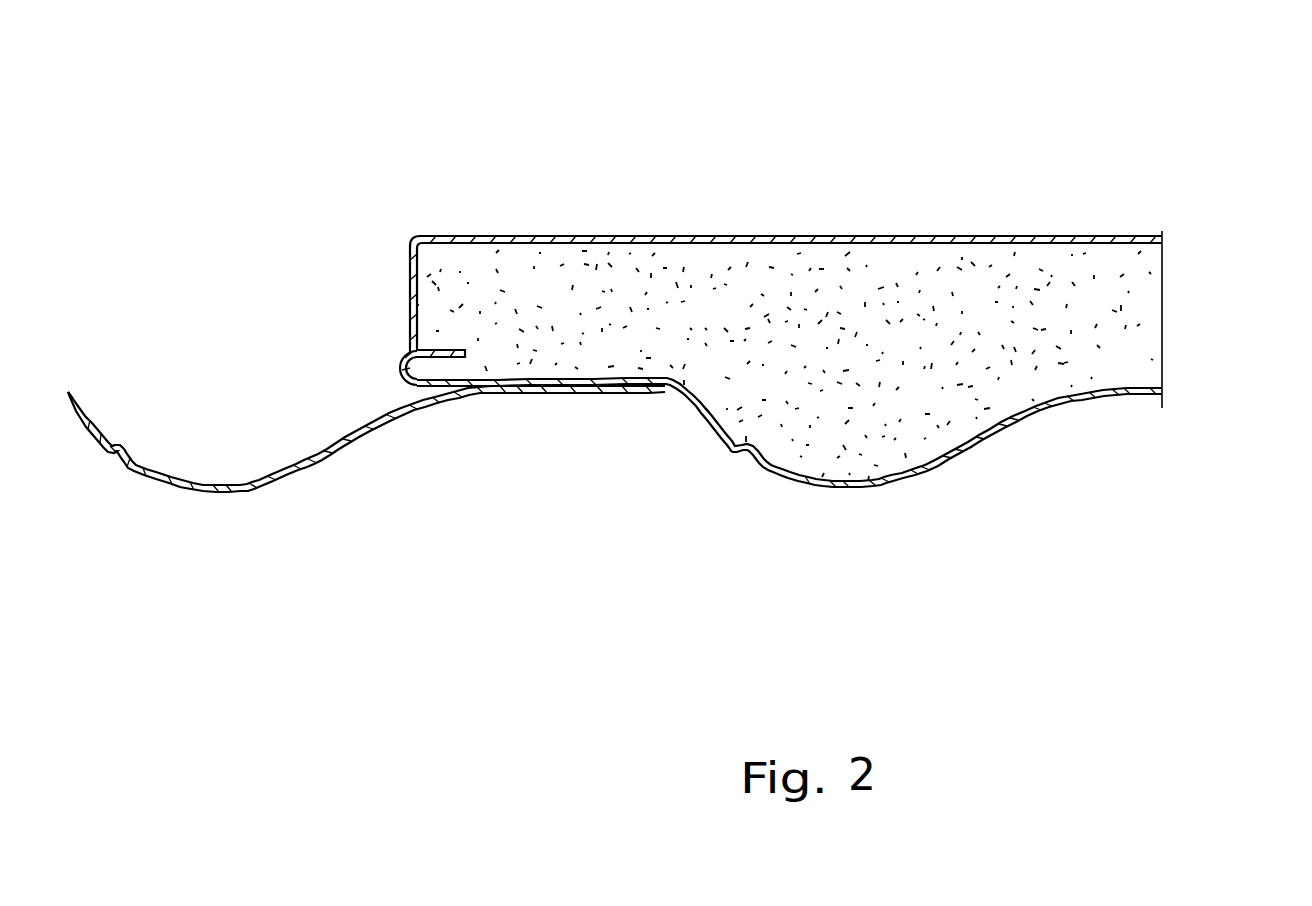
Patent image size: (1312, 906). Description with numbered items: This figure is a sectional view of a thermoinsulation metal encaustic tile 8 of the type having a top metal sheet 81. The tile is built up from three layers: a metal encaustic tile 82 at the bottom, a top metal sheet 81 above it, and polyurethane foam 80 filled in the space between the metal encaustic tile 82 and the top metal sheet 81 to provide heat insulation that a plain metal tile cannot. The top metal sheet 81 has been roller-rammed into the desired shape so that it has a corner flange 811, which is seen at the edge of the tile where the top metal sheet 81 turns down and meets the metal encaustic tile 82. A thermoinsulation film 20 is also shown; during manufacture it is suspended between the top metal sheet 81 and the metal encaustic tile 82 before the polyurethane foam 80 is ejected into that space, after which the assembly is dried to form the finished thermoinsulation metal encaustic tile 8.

The thermoinsulation metal encaustic tile 8 is at (1108, 222).
The top metal sheet 81 is at (932, 240).
The corner flange 811 is at (405, 262).
The polyurethane foam 80 is at (1133, 330).
The metal encaustic tile 82 is at (728, 448).
The thermoinsulation film 20 is at (403, 368).